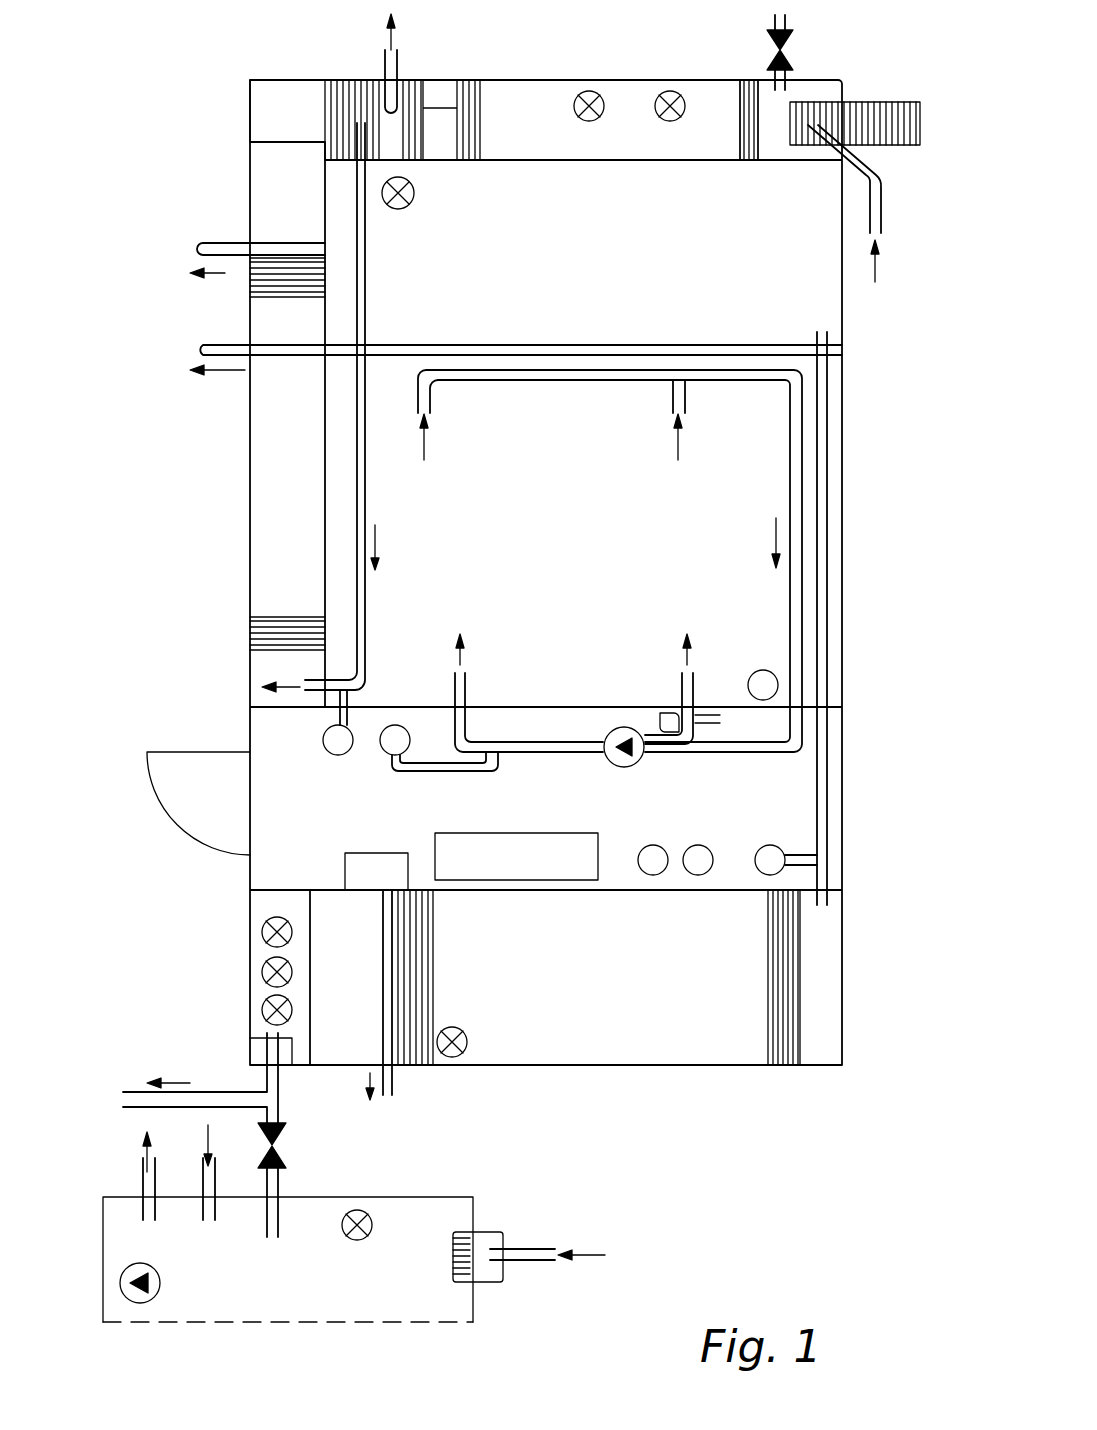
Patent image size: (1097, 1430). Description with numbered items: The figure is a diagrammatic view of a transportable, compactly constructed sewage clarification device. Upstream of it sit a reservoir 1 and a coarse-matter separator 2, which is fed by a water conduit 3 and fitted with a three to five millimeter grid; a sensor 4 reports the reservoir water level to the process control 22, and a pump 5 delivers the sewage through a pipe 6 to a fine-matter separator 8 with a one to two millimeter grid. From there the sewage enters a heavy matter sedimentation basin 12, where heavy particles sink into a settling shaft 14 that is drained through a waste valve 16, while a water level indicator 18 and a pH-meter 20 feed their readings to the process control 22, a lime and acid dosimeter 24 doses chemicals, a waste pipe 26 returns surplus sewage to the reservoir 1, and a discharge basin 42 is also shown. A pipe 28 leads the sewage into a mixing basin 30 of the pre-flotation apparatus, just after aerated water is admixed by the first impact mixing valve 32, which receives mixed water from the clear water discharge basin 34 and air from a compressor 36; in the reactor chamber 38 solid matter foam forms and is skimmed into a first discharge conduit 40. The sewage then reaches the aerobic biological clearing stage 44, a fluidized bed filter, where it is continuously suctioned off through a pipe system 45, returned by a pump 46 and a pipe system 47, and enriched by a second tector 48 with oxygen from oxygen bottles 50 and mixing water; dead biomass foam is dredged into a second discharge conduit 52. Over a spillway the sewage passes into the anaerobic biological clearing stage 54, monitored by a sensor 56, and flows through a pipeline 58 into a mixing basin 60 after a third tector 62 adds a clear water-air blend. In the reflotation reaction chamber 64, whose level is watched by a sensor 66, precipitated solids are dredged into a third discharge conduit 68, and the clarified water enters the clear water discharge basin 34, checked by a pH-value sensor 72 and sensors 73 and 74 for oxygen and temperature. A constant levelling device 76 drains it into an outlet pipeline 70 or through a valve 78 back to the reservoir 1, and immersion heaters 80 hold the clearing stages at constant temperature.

The reservoir 1 is at (283, 1290).
The coarse-matter separator 2 is at (479, 1264).
The water conduit 3 is at (541, 1262).
The sensor 4 is at (357, 1242).
The pump 5 is at (162, 1284).
The pipe 6 is at (882, 206).
The fine-matter separator 8 is at (876, 110).
The heavy matter sedimentation basin 12 is at (634, 105).
The settling shaft 14 is at (808, 92).
The waste valve 16 is at (784, 45).
The water level indicator 18 is at (672, 92).
The pH-meter 20 is at (589, 92).
The process control 22 is at (346, 870).
The lime and acid dosimeter 24 is at (439, 107).
The waste pipe 26 is at (385, 65).
The pipe 28 is at (357, 496).
The mixing basin 30 is at (262, 663).
The first impact mixing valve 32 is at (320, 758).
The clear water discharge basin 34 is at (252, 904).
The compressor 36 is at (456, 834).
The reactor chamber 38 is at (258, 436).
The first discharge conduit 40 is at (213, 242).
The discharge basin 42 is at (262, 102).
The aerobic biological clearing stage 44 is at (610, 561).
The pipe system 45 is at (430, 410).
The pump 46 is at (624, 769).
The pipe system 47 is at (465, 690).
The second tector 48 is at (399, 725).
The oxygen bottles 50 is at (698, 877).
The second discharge conduit 52 is at (206, 345).
The anaerobic biological clearing stage 54 is at (772, 288).
The sensor 56 is at (415, 189).
The pipeline 58 is at (824, 392).
The mixing basin 60 is at (822, 1066).
The third tector 62 is at (764, 844).
The reflotation reaction chamber 64 is at (607, 1066).
The sensor 66 is at (453, 1060).
The third discharge conduit 68 is at (392, 1092).
The outlet pipeline 70 is at (136, 1092).
The pH-value sensor 72 is at (262, 1010).
The sensor 73 is at (262, 972).
The sensor 74 is at (262, 934).
The constant levelling device 76 is at (250, 1050).
The valve 78 is at (282, 1142).
The immersion heaters 80 is at (778, 685).